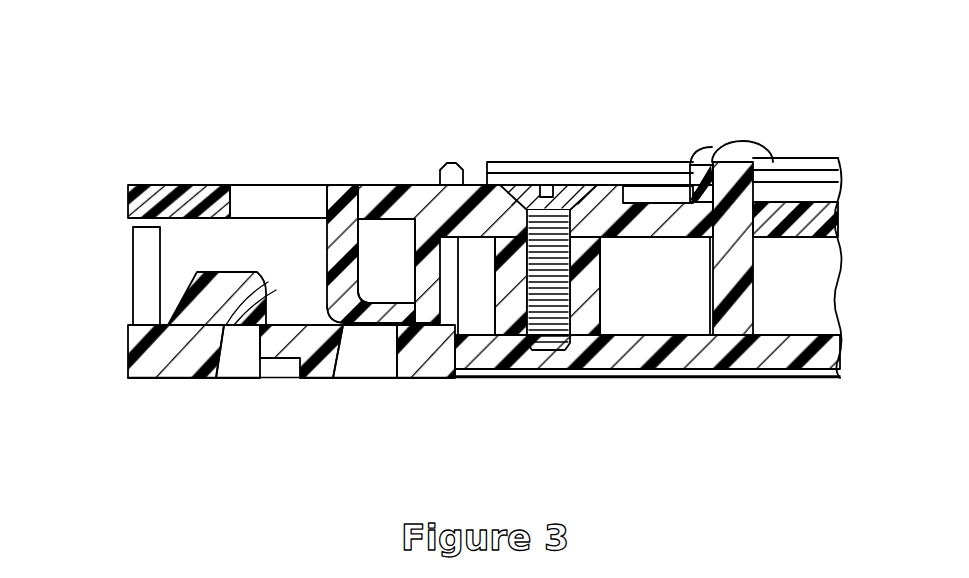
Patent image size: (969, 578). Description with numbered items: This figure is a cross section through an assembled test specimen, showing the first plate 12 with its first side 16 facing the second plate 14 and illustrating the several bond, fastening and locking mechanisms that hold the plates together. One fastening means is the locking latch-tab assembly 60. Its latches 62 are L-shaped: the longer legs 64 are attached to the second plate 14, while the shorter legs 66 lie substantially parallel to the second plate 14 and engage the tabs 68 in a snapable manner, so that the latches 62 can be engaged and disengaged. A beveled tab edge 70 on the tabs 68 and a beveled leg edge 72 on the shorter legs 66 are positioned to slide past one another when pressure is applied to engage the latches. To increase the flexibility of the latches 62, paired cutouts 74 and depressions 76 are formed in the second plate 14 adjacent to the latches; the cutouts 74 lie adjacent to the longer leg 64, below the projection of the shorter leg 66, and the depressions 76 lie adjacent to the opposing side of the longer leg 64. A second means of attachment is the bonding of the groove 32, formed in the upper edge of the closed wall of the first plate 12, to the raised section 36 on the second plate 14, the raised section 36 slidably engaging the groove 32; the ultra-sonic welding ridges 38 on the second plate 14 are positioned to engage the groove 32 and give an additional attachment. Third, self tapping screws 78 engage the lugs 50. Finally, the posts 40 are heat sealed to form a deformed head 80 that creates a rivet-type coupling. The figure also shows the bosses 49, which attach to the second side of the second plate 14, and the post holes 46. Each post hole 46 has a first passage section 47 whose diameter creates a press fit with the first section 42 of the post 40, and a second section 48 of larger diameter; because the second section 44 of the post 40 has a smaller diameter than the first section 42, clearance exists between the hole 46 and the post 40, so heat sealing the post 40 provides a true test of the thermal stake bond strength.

The second plate 14 is at (163, 183).
The tabs 68 is at (243, 270).
The locking latch-tab assembly 60 is at (297, 306).
The cutouts 74 is at (306, 207).
The depressions 76 is at (407, 243).
The groove 32 is at (420, 236).
The ultra-sonic welding ridges 38 is at (450, 165).
The raised section 36 is at (480, 207).
The self tapping screws 78 is at (567, 205).
The first passage section 47 is at (693, 163).
The deformed head 80 is at (703, 138).
The second section 44 is at (741, 145).
The bosses 49 is at (768, 200).
The first sections 42 is at (765, 224).
The post holes 46 is at (768, 254).
The first side 16 is at (133, 324).
The first plate 12 is at (126, 352).
The beveled tab edge 70 is at (298, 375).
The beveled leg edge 72 is at (265, 362).
The latches 62 is at (337, 362).
The shorter legs 66 is at (340, 367).
The longer legs 64 is at (362, 305).
The lugs 50 is at (583, 312).
The second section 48 is at (703, 235).
The posts 40 is at (752, 262).